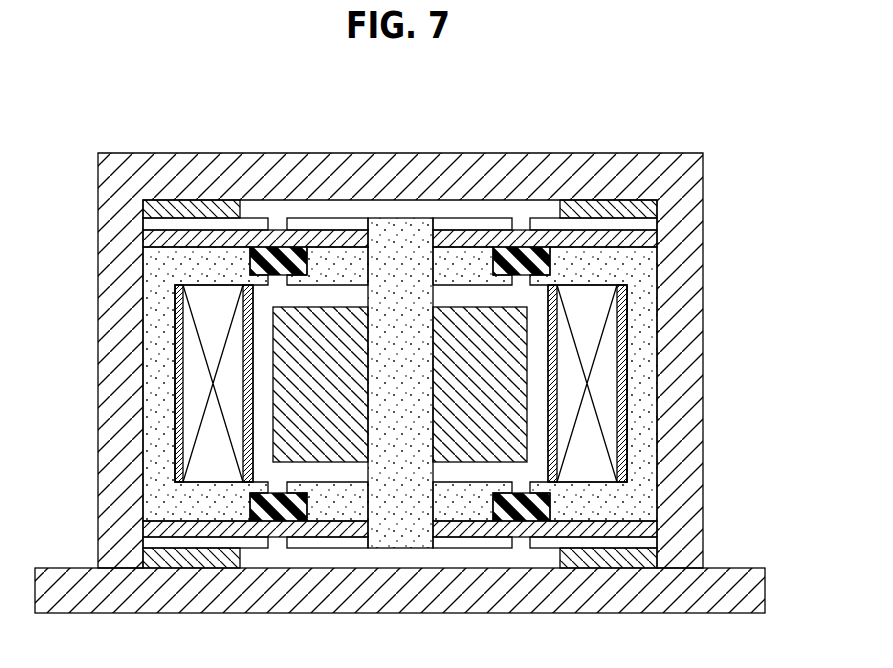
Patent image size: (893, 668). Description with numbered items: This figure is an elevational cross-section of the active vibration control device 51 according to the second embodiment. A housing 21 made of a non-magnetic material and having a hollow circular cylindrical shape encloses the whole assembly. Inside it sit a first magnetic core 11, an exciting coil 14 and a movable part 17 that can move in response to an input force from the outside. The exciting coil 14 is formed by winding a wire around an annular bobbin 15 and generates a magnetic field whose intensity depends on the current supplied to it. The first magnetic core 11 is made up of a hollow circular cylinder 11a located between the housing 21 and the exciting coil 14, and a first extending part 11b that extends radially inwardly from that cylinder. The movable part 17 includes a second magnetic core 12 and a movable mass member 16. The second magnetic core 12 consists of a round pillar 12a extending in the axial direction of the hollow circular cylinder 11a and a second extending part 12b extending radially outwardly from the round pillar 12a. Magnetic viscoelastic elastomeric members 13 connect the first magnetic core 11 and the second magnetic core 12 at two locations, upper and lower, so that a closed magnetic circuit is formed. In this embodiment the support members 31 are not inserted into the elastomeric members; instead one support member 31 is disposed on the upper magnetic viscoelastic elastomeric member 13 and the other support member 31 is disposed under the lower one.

The first magnetic core 11 is at (486, 370).
The hollow circular cylinder 11a is at (643, 310).
The first extending part 11b is at (602, 270).
The second magnetic core 12 is at (400, 305).
The round pillar 12a is at (418, 234).
The second extending part 12b is at (473, 220).
The magnetic viscoelastic elastomeric member 13 is at (293, 250).
The exciting coil 14 is at (193, 345).
The bobbin 15 is at (175, 403).
The movable mass member 16 is at (512, 437).
The movable part 17 is at (360, 219).
The housing 21 is at (98, 204).
The support member 31 is at (230, 237).
The active vibration control device 51 is at (738, 129).